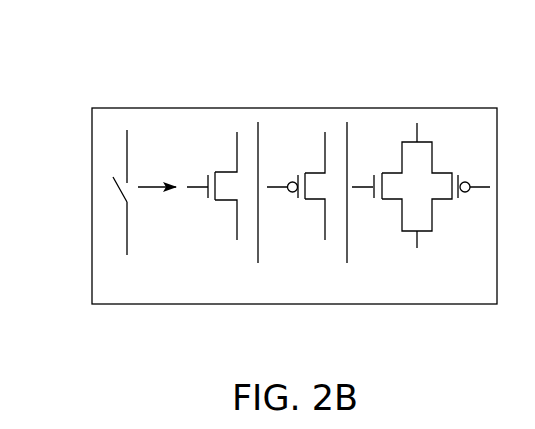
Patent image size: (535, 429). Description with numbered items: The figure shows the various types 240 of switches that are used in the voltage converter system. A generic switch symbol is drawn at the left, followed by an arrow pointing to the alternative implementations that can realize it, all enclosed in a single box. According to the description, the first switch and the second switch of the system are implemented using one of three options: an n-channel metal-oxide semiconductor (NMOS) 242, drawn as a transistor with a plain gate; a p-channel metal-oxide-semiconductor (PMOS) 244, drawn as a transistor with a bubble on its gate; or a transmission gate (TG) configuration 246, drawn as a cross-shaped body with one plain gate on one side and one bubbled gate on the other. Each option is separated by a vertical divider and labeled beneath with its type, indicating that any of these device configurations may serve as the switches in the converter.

The various types of the switches 240 is at (136, 64).
The n-channel metal-oxide semiconductor (NMOS) 242 is at (245, 129).
The p-channel metal-oxide-semiconductor (PMOS) 244 is at (333, 129).
The transmission gate (TG) configuration 246 is at (406, 129).